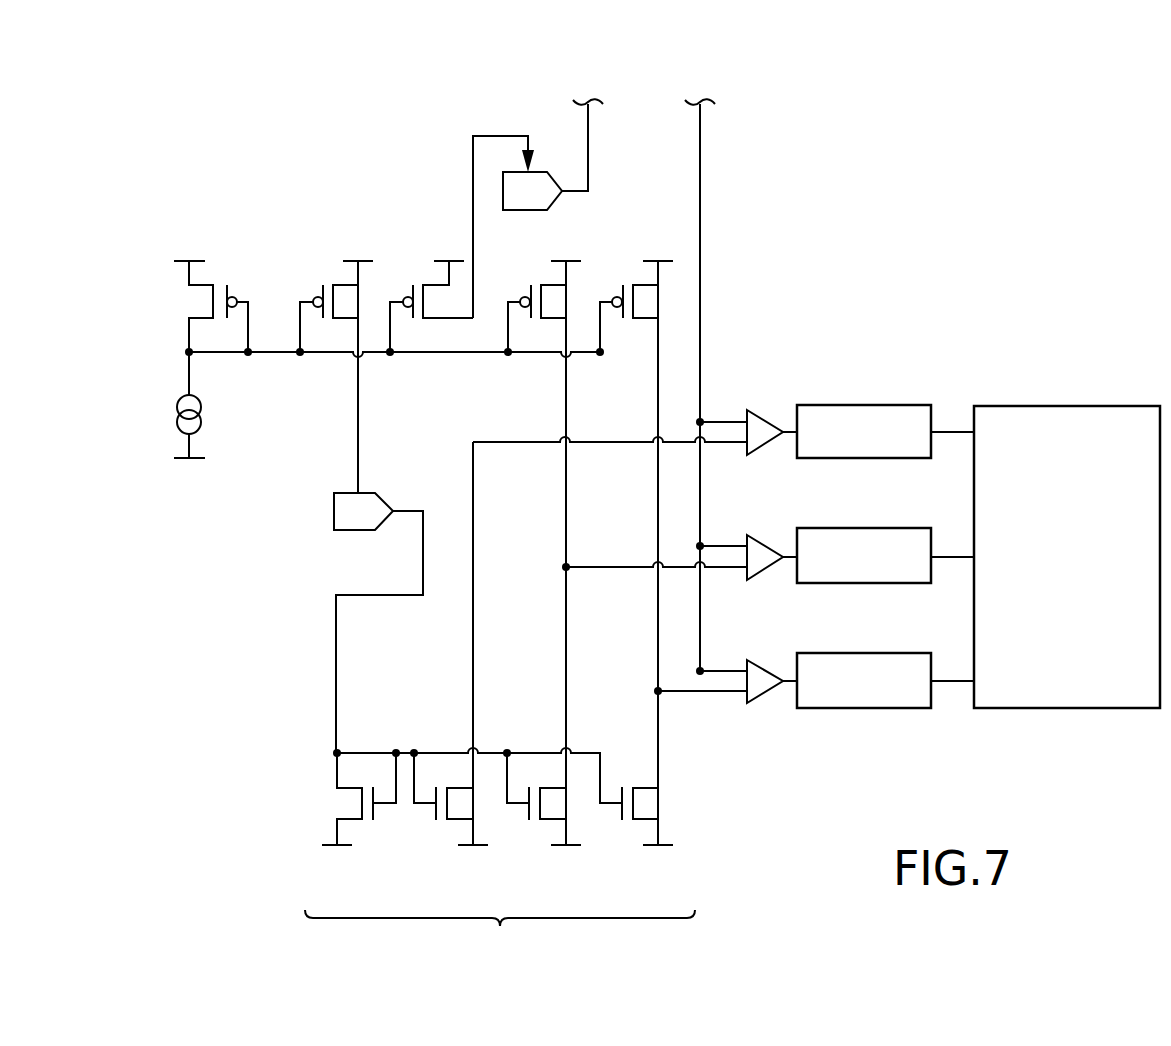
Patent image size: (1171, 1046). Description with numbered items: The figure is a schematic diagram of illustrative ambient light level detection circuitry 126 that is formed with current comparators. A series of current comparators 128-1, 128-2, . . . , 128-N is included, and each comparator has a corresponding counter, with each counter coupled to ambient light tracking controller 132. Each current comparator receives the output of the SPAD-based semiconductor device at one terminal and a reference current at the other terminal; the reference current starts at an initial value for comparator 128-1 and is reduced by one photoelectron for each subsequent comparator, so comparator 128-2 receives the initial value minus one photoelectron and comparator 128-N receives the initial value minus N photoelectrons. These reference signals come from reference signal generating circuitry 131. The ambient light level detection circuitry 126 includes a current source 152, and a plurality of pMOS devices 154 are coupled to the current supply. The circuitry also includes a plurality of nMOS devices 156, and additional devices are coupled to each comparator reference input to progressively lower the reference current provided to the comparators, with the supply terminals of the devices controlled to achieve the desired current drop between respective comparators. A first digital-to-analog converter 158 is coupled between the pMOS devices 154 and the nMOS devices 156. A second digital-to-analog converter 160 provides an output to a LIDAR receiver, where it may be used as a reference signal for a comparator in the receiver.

The ambient light level detection circuitry 126 is at (828, 285).
The current comparator 128-1 is at (770, 412).
The current comparator 128-2 is at (770, 537).
The current comparator 128-N is at (770, 661).
The reference signal generating circuitry 131 is at (500, 936).
The ambient light tracking controller 132 is at (1074, 406).
The current source 152 is at (222, 410).
The pMOS devices 154 is at (303, 285).
The nMOS devices 156 is at (412, 833).
The first digital-to-analog converter 158 is at (323, 512).
The second digital-to-analog converter 160 is at (566, 210).